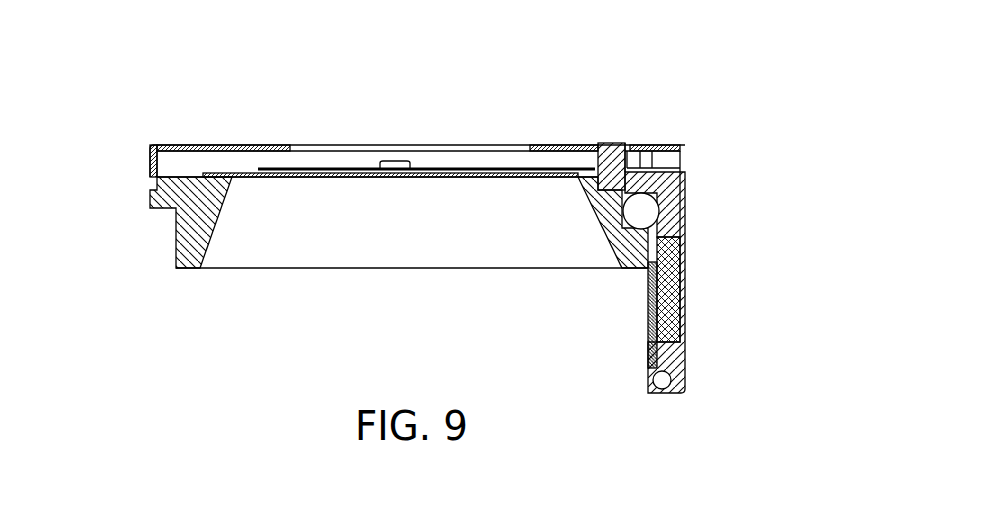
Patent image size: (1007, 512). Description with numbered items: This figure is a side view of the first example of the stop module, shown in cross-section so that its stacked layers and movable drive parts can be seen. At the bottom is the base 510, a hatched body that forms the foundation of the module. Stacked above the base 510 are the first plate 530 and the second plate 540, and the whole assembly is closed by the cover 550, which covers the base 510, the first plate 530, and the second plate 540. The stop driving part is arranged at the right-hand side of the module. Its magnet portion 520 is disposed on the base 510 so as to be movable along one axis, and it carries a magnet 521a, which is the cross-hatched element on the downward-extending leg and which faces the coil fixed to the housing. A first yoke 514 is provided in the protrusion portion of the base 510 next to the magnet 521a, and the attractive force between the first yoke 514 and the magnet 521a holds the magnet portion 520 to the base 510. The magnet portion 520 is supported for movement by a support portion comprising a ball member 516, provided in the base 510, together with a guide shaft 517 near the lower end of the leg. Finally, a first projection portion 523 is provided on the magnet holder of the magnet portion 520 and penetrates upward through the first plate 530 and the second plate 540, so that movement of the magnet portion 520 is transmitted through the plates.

The base 510 is at (188, 252).
The first yoke 514 is at (650, 295).
The ball member 516 is at (660, 212).
The guide shaft 517 is at (656, 385).
The magnet portion 520 is at (665, 220).
The magnet 521a is at (668, 284).
The first projection portion 523 is at (608, 143).
The first plate 530 is at (322, 173).
The second plate 540 is at (313, 170).
The cover 550 is at (208, 145).